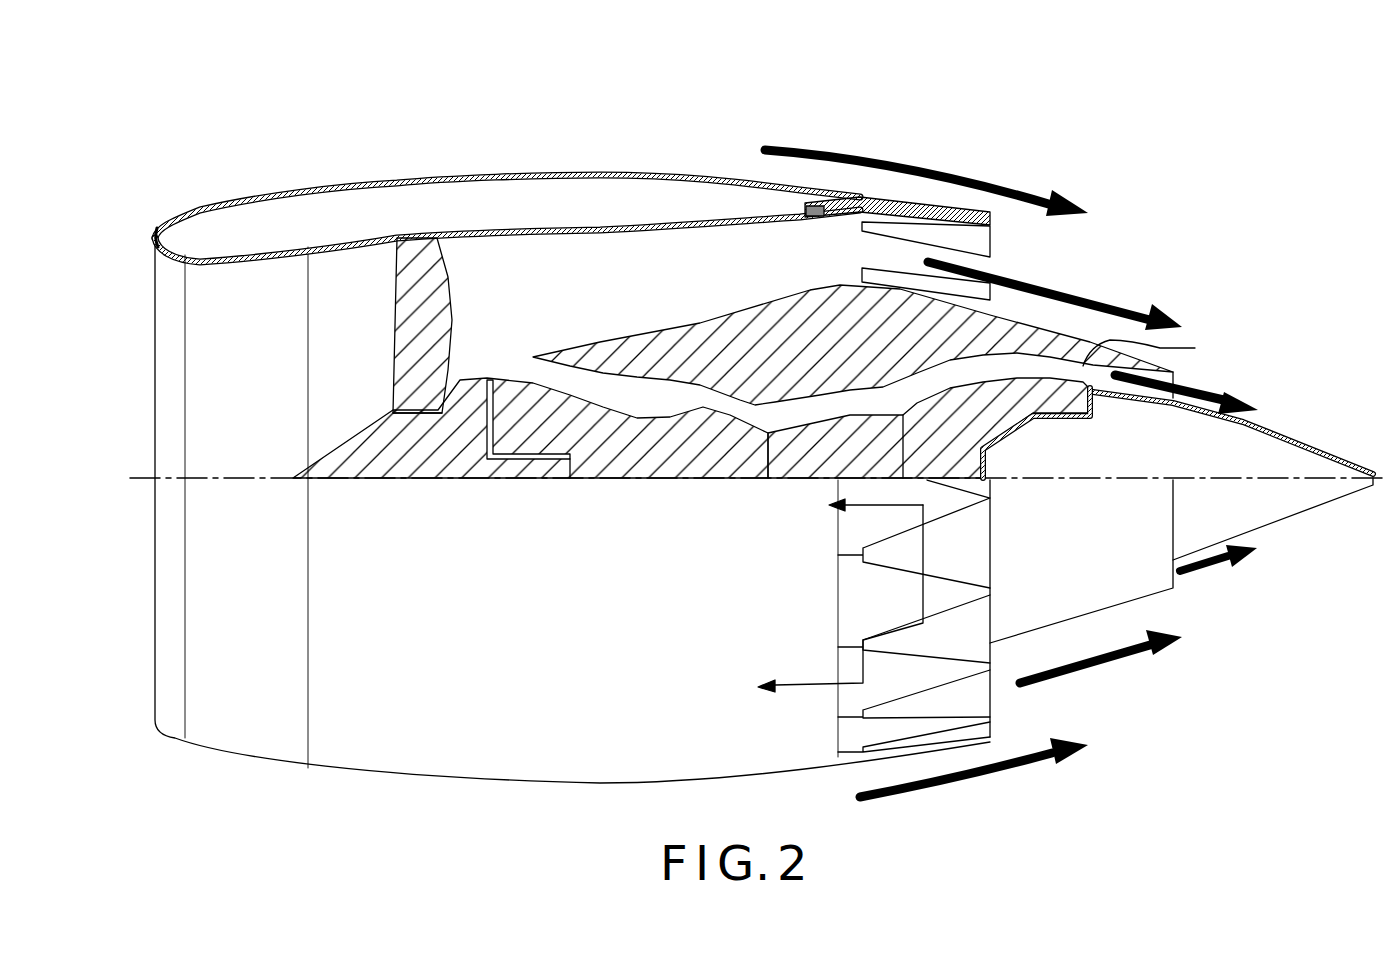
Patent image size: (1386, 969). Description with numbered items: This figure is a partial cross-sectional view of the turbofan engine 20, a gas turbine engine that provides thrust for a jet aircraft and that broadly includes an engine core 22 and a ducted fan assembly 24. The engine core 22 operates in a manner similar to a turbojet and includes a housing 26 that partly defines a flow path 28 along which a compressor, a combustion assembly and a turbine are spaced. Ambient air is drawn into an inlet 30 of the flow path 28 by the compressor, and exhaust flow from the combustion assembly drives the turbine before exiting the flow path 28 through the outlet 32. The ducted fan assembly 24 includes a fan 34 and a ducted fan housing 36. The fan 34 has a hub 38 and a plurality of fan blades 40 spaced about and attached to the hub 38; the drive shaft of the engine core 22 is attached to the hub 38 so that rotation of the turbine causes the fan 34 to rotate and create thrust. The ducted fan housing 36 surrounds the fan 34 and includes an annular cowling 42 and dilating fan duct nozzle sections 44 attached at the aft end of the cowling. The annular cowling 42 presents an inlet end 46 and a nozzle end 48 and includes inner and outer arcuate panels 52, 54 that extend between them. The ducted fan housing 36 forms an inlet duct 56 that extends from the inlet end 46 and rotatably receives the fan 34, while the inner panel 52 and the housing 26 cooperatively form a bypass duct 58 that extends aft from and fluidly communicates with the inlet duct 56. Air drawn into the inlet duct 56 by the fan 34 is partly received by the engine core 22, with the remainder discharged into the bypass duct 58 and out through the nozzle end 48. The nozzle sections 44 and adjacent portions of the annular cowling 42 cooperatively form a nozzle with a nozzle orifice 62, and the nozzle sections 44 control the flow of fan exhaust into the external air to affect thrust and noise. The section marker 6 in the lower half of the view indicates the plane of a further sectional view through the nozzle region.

The turbofan engine 20 is at (243, 102).
The engine core 22 is at (1140, 568).
The ducted fan assembly 24 is at (572, 175).
The housing 26 is at (738, 342).
The flow path 28 is at (1156, 366).
The inlet 30 is at (518, 363).
The outlet 32 is at (1192, 380).
The fan 34 is at (365, 440).
The ducted fan housing 36 is at (252, 192).
The hub 38 is at (398, 420).
The fan blades 40 is at (432, 262).
The annular cowling 42 is at (657, 233).
The dilating fan duct nozzle sections 44 is at (905, 205).
The inlet end 46 is at (132, 343).
The nozzle end 48 is at (1025, 262).
The inner arcuate panel 52 is at (522, 232).
The outer arcuate panel 54 is at (455, 172).
The inlet duct 56 is at (281, 259).
The bypass duct 58 is at (600, 237).
The nozzle orifice 62 is at (995, 233).
The section line 6- 6 is at (819, 597).